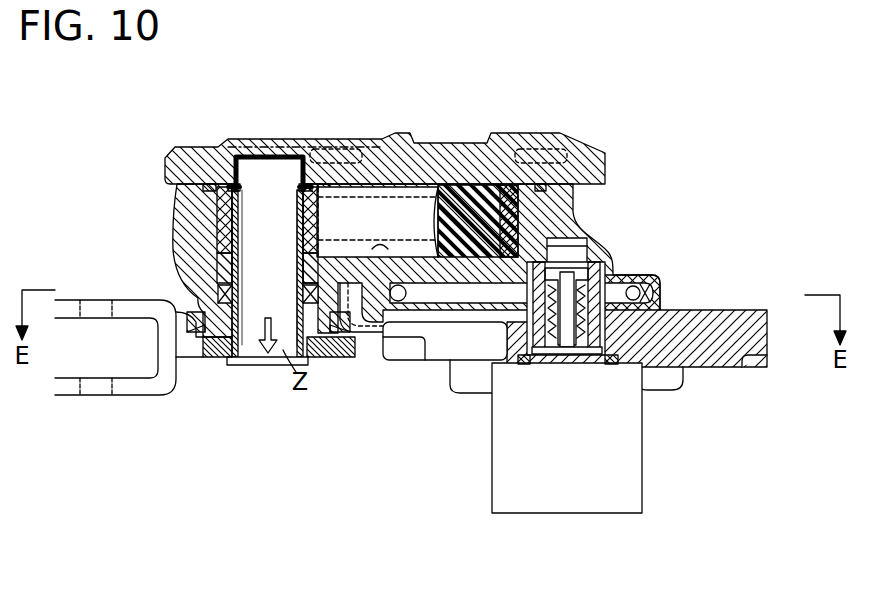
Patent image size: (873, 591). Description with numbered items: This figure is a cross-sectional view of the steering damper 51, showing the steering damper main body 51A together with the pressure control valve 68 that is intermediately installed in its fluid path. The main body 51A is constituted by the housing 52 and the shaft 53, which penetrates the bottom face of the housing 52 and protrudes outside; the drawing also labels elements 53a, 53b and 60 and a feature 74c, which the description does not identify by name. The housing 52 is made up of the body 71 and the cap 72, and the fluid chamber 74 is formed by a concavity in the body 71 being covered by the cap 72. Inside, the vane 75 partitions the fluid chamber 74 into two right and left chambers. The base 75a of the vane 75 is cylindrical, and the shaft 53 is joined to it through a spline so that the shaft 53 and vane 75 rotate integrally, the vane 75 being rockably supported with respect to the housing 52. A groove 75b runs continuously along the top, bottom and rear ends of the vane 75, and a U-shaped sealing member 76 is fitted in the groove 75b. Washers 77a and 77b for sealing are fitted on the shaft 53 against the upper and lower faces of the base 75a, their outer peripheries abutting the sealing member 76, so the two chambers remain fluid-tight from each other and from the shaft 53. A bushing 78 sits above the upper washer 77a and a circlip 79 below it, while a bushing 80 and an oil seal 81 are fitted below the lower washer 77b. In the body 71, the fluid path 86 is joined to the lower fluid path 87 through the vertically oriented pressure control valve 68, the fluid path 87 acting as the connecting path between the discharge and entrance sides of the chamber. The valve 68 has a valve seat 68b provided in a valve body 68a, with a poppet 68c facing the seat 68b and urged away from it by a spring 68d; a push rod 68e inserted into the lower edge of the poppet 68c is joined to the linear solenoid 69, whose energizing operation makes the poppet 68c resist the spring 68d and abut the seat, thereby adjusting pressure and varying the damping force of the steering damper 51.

The steering damper 51 is at (411, 312).
The steering damper main body 51A is at (603, 132).
The housing 52 is at (330, 234).
The shaft 53 is at (253, 237).
The tube lower portion 53a is at (245, 347).
The tube upper flange 53b is at (258, 123).
The yoke 60 is at (133, 388).
The pressure control valve 68 is at (575, 407).
The valve body 68a is at (675, 392).
The valve seat 68b is at (588, 272).
The poppet 68c is at (553, 297).
The spring 68d is at (653, 292).
The push rod 68e is at (567, 337).
The linear solenoid 69 is at (565, 502).
The body 71 is at (218, 260).
The cap 72 is at (170, 164).
The fluid chamber 74 is at (476, 184).
The piston lip 74c is at (380, 252).
The vane 75 is at (400, 215).
The base 75a is at (223, 227).
The groove 75b is at (337, 188).
The sealing member 76 is at (502, 190).
The washer for sealing 77a is at (232, 148).
The washer for sealing 77b is at (220, 258).
The bushing 78 is at (270, 165).
The circlip 79 is at (241, 192).
The bushing 80 is at (233, 265).
The oil seal 81 is at (233, 295).
The fluid path 86 is at (593, 238).
The fluid path 87 is at (450, 296).